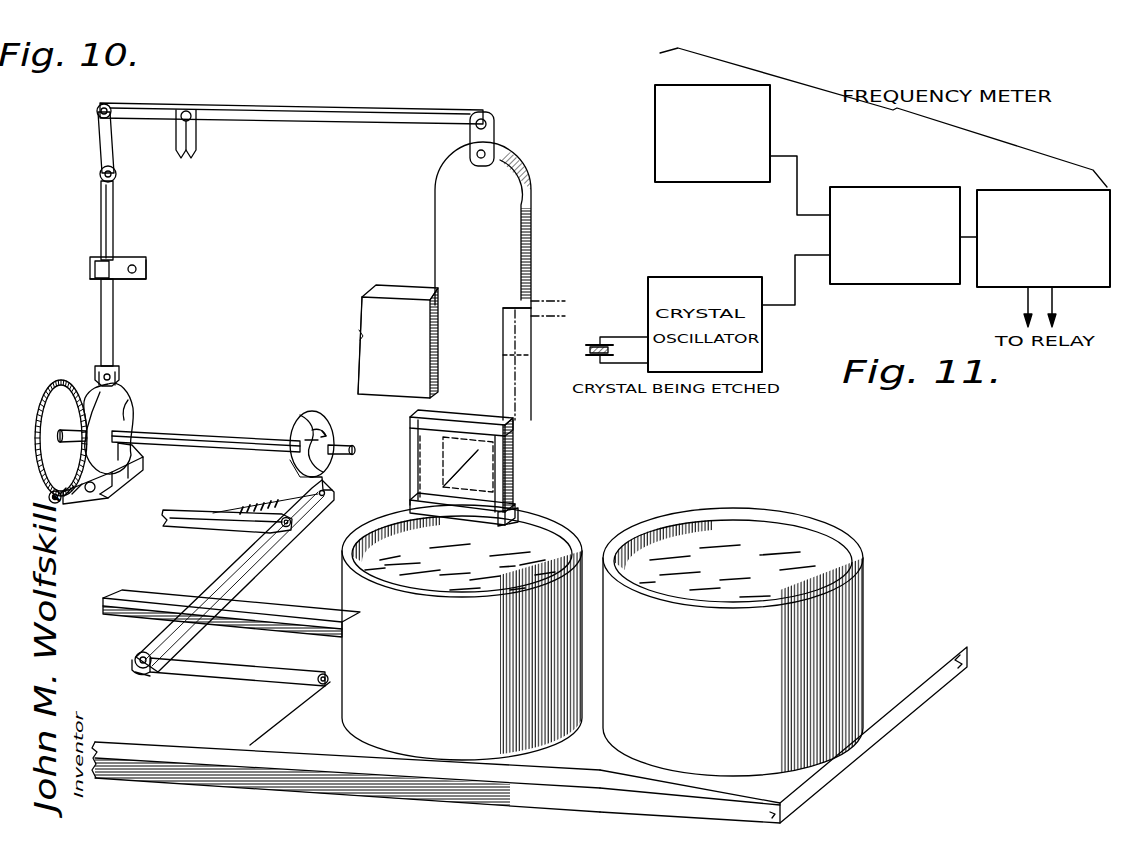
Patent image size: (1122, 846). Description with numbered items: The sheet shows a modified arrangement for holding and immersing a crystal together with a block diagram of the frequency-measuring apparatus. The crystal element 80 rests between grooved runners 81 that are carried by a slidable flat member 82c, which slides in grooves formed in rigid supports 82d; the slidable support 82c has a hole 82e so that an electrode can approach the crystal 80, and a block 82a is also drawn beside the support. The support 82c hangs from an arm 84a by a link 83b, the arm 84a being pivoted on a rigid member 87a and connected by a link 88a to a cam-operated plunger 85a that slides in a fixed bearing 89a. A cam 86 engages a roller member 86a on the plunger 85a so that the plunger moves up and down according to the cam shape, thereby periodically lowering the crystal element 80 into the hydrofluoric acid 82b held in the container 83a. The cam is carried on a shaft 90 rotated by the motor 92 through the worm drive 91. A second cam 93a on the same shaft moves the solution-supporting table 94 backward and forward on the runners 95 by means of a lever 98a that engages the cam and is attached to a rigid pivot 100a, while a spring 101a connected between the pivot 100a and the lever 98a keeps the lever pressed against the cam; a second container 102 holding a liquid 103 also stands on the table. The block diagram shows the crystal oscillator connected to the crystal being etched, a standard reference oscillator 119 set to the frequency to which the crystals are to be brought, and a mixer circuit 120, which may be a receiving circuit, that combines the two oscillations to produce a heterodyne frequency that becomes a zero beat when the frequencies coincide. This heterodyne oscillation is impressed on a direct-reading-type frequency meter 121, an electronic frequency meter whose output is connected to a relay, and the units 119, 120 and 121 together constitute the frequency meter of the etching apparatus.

In FIG. 10, the crystal element 80 is at (416, 472).
In FIG. 10, the grooved runners 81 is at (515, 432).
In FIG. 10, the counterweight block 82a is at (368, 343).
In FIG. 10, the hydrofluoric acid 82b is at (525, 548).
In FIG. 10, the slidable flat member 82c is at (507, 255).
In FIG. 10, the rigid supports 82d is at (527, 328).
In FIG. 10, the hole 82e is at (483, 464).
In FIG. 10, the container 83a is at (462, 632).
In FIG. 10, the link 83b is at (494, 133).
In FIG. 10, the arm 84a is at (349, 120).
In FIG. 10, the cam-operated plunger 85a is at (115, 243).
In FIG. 10, the cam 86 is at (128, 410).
In FIG. 10, the roller member 86a is at (96, 378).
In FIG. 10, the rigid member 87a is at (197, 130).
In FIG. 10, the link 88a is at (100, 135).
In FIG. 10, the fixed bearing 89a is at (125, 280).
In FIG. 10, the shaft 90 is at (205, 436).
In FIG. 10, the worm drive 91 is at (40, 456).
In FIG. 10, the motor 92 is at (80, 502).
In FIG. 10, the cam 93a is at (305, 414).
In FIG. 10, the table 94 is at (905, 690).
In FIG. 10, the runners 95 is at (116, 608).
In FIG. 10, the lever 98a is at (238, 566).
In FIG. 10, the rigid pivot 100a is at (232, 522).
In FIG. 10, the spring 101a is at (262, 496).
In FIG. 10, the rinse tank 102 is at (733, 642).
In FIG. 10, the rinse liquid 103 is at (805, 565).
In FIG. 11, the standard reference oscillator 119 is at (737, 183).
In FIG. 11, the mixer circuit 120 is at (890, 194).
In FIG. 11, the direct-reading-type frequency meter 121 is at (1036, 196).